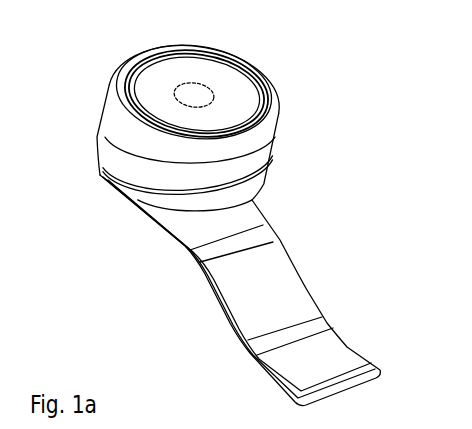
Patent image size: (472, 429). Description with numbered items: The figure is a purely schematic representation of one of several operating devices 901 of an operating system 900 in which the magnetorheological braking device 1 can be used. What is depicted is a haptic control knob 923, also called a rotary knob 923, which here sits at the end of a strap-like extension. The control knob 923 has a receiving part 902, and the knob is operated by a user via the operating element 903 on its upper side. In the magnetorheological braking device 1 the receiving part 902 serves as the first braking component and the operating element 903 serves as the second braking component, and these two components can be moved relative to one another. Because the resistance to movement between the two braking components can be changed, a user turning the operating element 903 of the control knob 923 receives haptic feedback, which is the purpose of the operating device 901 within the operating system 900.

The magnetorheological braking device 1 is at (252, 59).
The operating system 900 is at (116, 54).
The operating device 901 is at (95, 200).
The haptic control knob 923 is at (171, 232).
The receiving part 902 is at (287, 288).
The operating element 903 is at (228, 174).